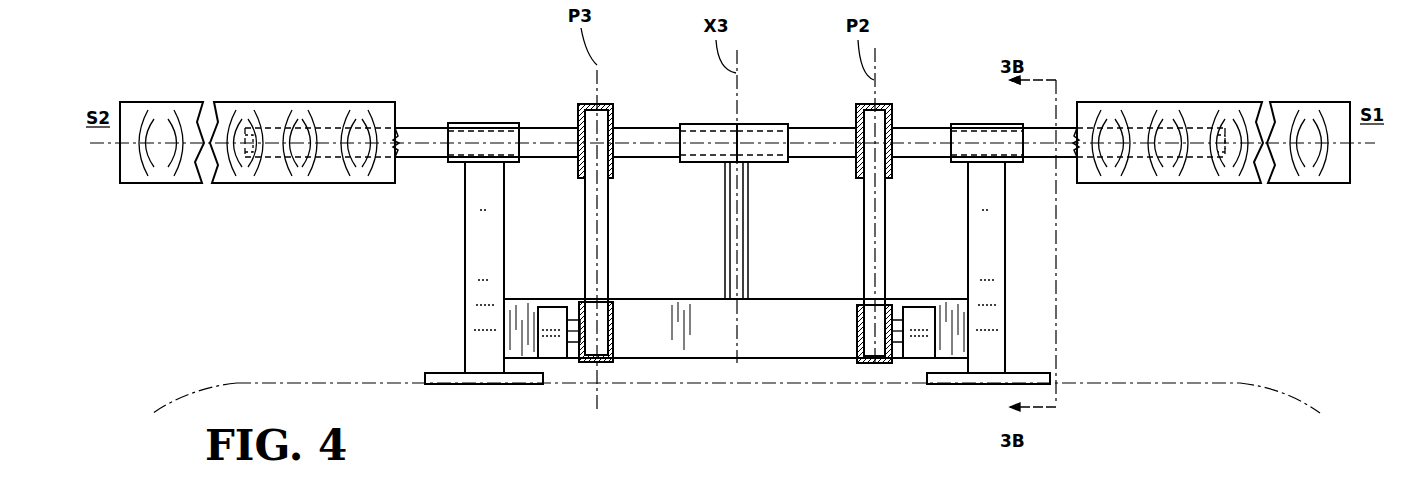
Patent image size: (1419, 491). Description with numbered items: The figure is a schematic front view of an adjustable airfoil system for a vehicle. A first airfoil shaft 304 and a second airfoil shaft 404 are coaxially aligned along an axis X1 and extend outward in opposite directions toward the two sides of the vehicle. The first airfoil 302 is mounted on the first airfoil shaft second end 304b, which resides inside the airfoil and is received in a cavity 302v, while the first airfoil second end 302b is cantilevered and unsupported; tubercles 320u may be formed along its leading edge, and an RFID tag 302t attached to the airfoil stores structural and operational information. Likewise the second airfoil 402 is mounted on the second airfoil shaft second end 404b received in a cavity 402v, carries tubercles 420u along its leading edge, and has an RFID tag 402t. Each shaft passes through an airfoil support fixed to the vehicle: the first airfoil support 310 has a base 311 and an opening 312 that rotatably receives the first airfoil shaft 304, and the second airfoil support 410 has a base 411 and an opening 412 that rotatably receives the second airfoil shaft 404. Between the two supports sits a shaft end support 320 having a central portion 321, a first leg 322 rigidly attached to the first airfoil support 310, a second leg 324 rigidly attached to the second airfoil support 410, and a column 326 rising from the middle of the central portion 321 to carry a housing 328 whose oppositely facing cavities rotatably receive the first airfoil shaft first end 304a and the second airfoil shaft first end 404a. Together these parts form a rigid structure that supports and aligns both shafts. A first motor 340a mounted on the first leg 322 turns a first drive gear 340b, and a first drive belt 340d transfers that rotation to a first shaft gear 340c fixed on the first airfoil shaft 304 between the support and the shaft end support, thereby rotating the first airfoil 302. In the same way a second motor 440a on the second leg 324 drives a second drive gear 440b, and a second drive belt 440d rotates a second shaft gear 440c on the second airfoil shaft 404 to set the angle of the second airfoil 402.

The first airfoil 302 is at (1200, 102).
The first airfoil second end 302b is at (1335, 183).
The RFID tag 302t is at (1073, 160).
The cavity 302v is at (1155, 102).
The first airfoil shaft 304 is at (1038, 165).
The first airfoil shaft first end 304a is at (770, 130).
The first airfoil shaft second end 304b is at (1218, 135).
The first airfoil support 310 is at (1005, 262).
The base 311 is at (965, 382).
The opening 312 is at (990, 165).
The shaft end support 320 is at (752, 120).
The tubercles 320u is at (1232, 183).
The central portion 321 is at (705, 343).
The first leg 322 is at (945, 300).
The second leg 324 is at (530, 340).
The column 326 is at (725, 225).
The housing 328 is at (722, 130).
The first motor 340a is at (912, 350).
The first drive gear 340b is at (857, 330).
The first shaft gear 340c is at (892, 120).
The first drive belt 340d is at (865, 228).
The second airfoil 402 is at (164, 102).
The RFID tag 402t is at (398, 138).
The cavity 402v is at (300, 128).
The second airfoil shaft 404 is at (535, 140).
The second airfoil shaft first end 404a is at (690, 130).
The second airfoil shaft second end 404b is at (258, 165).
The second airfoil support 410 is at (465, 218).
The base 411 is at (475, 382).
The opening 412 is at (483, 128).
The tubercles 420u is at (330, 180).
The second motor 440a is at (557, 345).
The second drive gear 440b is at (572, 363).
The second shaft gear 440c is at (578, 120).
The second drive belt 440d is at (585, 230).
The axis X1 is at (1128, 125).